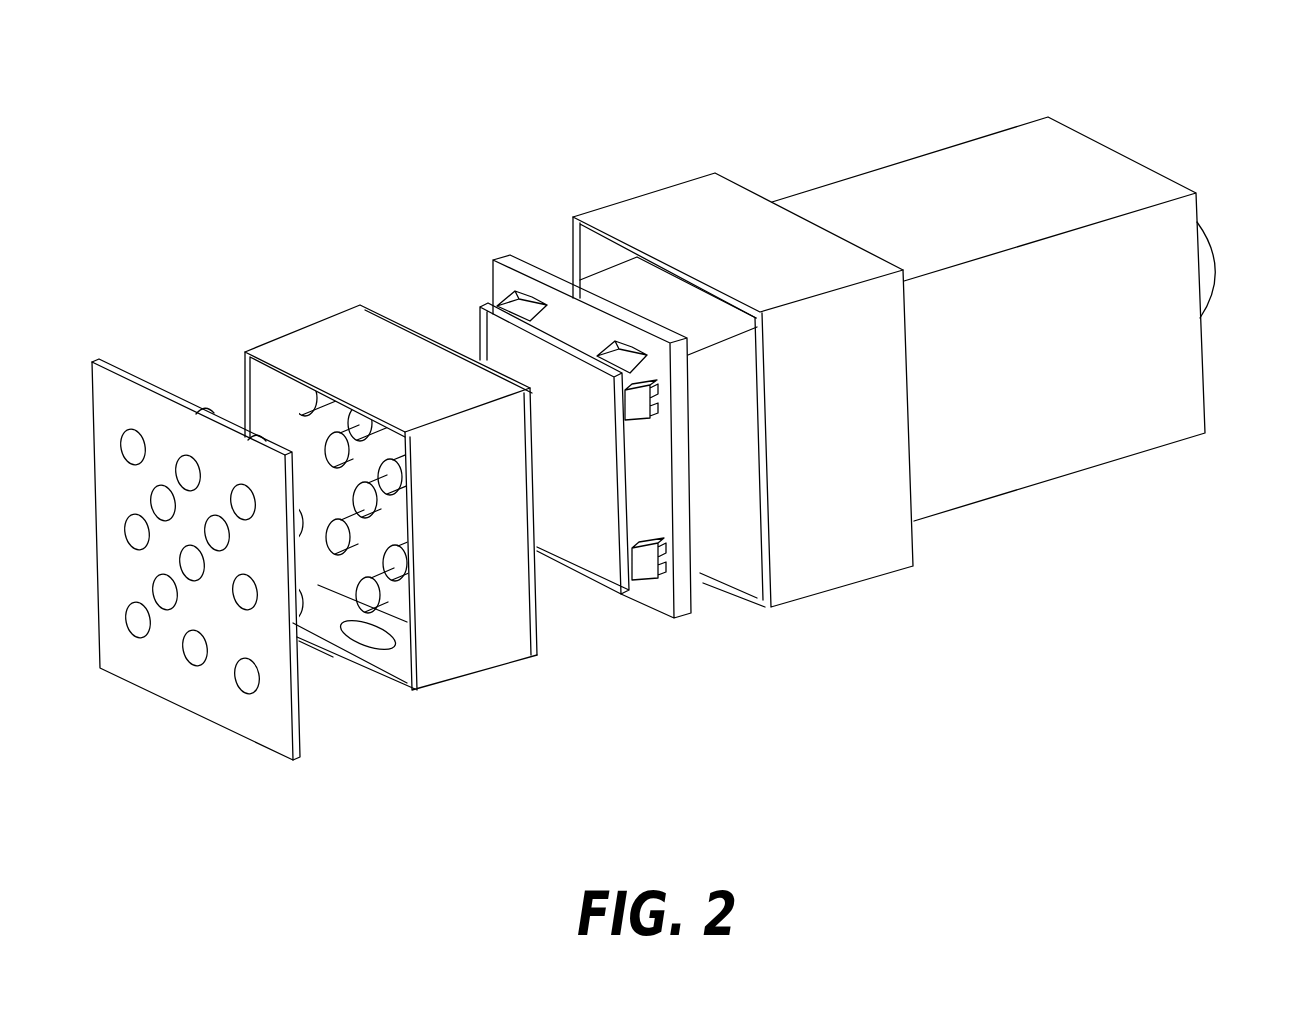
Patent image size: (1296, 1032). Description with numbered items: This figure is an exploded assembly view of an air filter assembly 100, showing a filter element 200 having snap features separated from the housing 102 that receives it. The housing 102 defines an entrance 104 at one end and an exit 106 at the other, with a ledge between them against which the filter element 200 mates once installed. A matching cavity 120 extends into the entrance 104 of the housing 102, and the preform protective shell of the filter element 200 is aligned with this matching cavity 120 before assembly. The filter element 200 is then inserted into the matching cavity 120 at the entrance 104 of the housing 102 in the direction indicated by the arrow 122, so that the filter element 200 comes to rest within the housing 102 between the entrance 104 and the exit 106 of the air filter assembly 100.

The air filter assembly 100 is at (699, 88).
The housing 102 is at (815, 178).
The entrance 104 is at (244, 680).
The exit 106 is at (1206, 224).
The matching cavity 120 is at (748, 590).
The arrow 122 is at (745, 464).
The filter element 200 is at (600, 560).